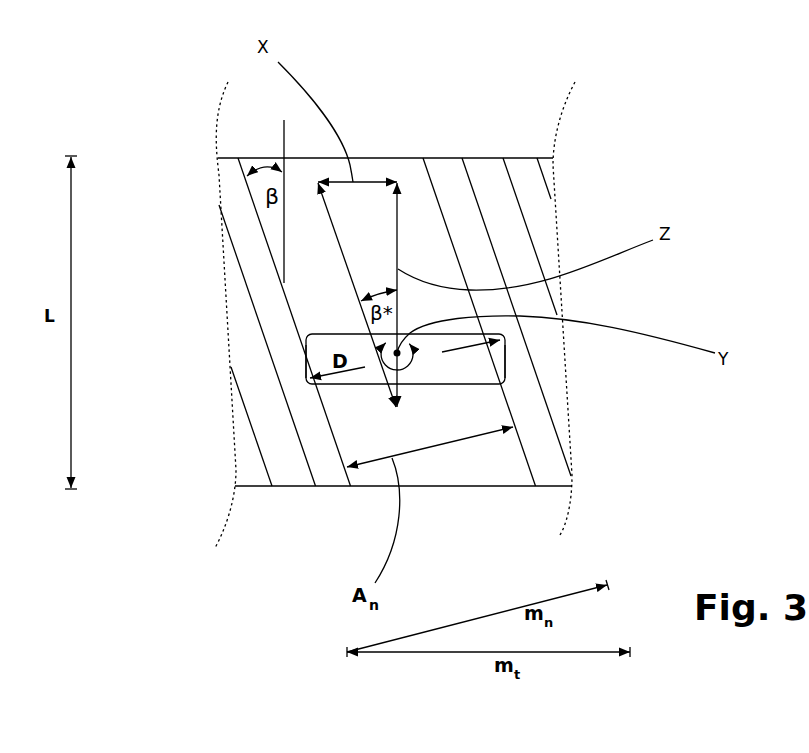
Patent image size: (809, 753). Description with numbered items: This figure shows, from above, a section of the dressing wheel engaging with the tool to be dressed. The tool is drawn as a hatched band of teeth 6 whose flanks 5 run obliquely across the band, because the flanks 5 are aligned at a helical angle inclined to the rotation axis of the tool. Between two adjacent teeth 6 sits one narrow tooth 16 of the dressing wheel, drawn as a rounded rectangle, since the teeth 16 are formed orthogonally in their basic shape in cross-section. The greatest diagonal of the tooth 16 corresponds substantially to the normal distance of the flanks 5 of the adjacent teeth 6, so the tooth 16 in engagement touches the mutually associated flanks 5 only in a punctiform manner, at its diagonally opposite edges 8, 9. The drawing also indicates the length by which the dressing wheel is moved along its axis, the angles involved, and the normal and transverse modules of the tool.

The tooth flanks 5 is at (455, 190).
The teeth of the tool 6 is at (485, 176).
The edge 8 is at (306, 380).
The edge 9 is at (505, 337).
The teeth of the dressing wheel 16 is at (458, 365).